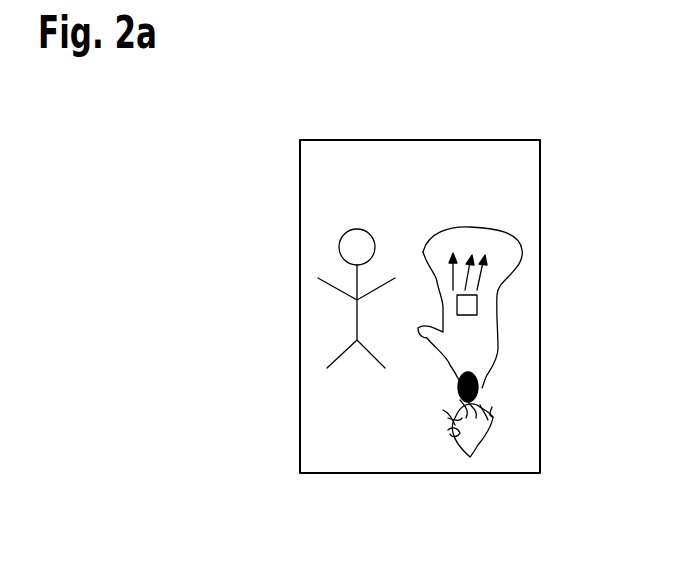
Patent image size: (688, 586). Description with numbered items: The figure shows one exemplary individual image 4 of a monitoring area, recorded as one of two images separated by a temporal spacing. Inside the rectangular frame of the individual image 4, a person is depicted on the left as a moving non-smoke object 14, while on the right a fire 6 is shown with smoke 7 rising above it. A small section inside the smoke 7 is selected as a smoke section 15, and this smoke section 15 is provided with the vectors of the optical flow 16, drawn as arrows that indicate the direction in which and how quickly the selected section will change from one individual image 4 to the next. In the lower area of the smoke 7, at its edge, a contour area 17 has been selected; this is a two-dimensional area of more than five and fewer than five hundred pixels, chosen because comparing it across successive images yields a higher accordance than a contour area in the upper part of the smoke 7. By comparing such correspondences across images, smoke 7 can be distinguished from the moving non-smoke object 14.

The individual image 4 is at (430, 123).
The moving non-smoke object 14 is at (357, 229).
The vectors of the optical flow 16 is at (472, 255).
The smoke section 15 is at (468, 305).
The smoke 7 is at (477, 343).
The contour area 17 is at (484, 392).
The fire 6 is at (470, 450).